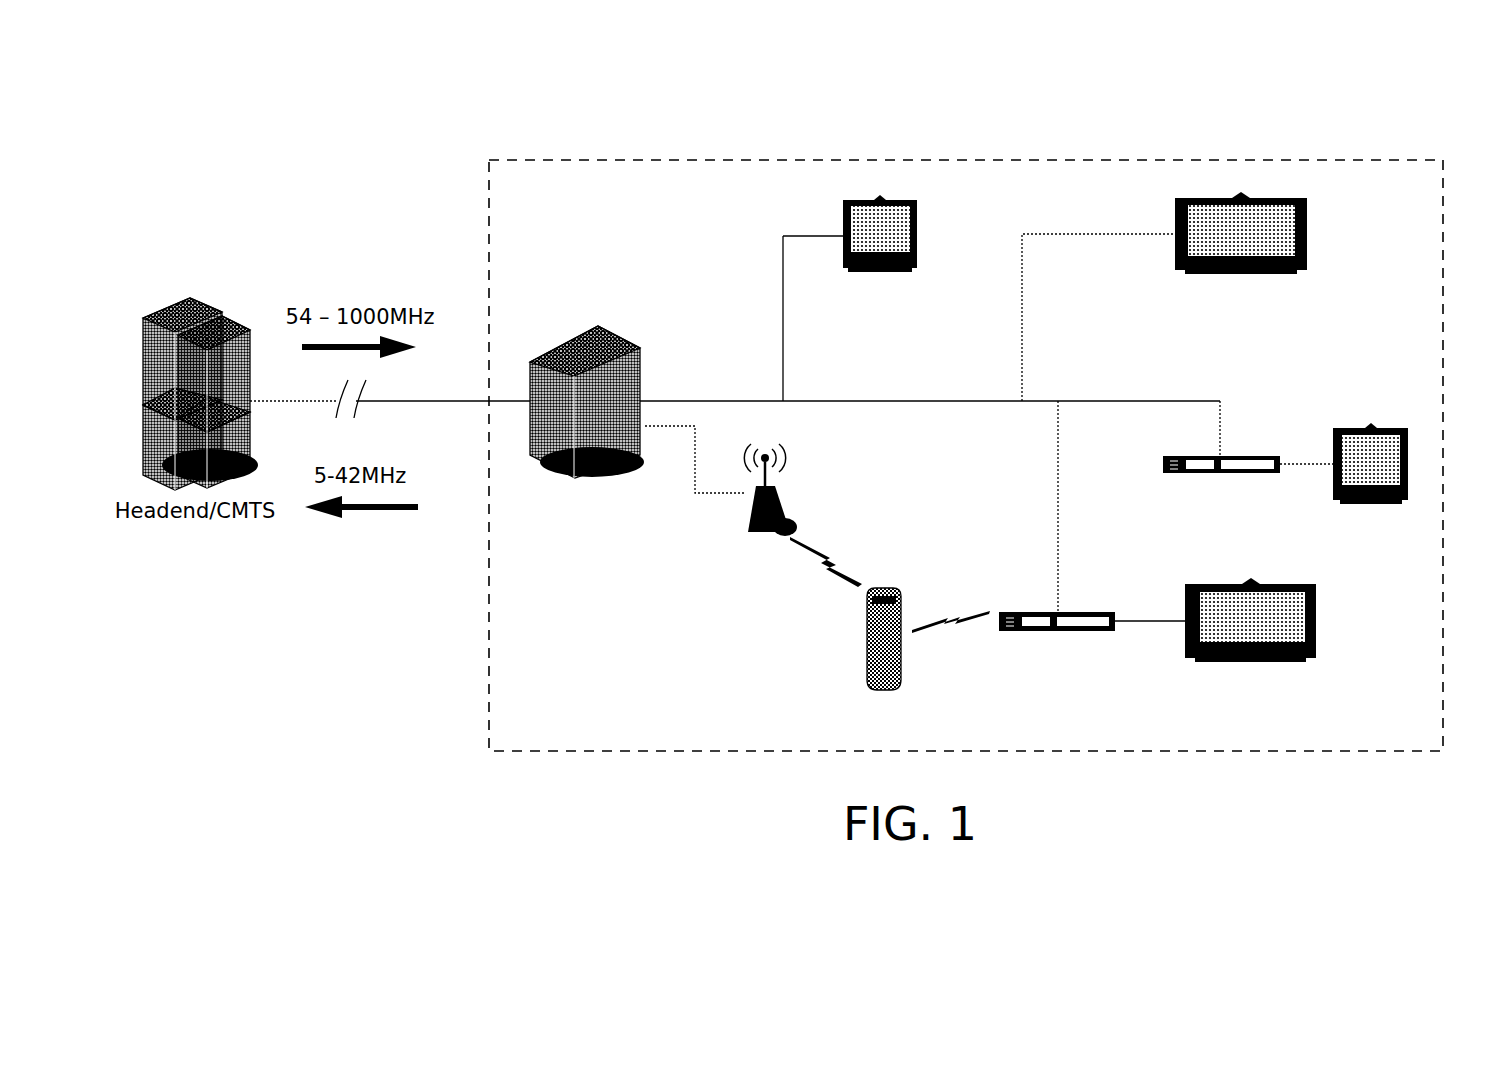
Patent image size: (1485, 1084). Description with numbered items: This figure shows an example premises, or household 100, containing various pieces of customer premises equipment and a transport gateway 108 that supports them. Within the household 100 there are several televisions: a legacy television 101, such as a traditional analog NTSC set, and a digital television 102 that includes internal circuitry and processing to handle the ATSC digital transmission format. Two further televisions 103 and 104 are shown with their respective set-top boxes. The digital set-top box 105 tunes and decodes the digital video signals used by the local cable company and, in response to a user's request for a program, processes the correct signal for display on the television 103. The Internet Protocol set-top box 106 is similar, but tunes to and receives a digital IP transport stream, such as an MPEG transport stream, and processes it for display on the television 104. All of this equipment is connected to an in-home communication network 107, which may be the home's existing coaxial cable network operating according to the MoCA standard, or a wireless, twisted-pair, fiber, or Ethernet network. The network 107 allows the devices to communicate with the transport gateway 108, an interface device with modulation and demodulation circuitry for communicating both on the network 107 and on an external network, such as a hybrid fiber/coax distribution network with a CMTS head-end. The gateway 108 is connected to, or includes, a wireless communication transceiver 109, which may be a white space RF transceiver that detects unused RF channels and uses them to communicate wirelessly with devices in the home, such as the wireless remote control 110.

The household 100 is at (470, 125).
The legacy television 101 is at (880, 265).
The digital television 102 is at (1241, 263).
The television 103 is at (1370, 479).
The television 104 is at (1250, 635).
The digital set-top box 105 is at (1222, 495).
The Internet Protocol set-top box 106 is at (1057, 656).
The in-home communication network 107 is at (958, 420).
The transport gateway 108 is at (587, 446).
The wireless communication transceiver 109 is at (770, 508).
The wireless remote control 110 is at (886, 657).